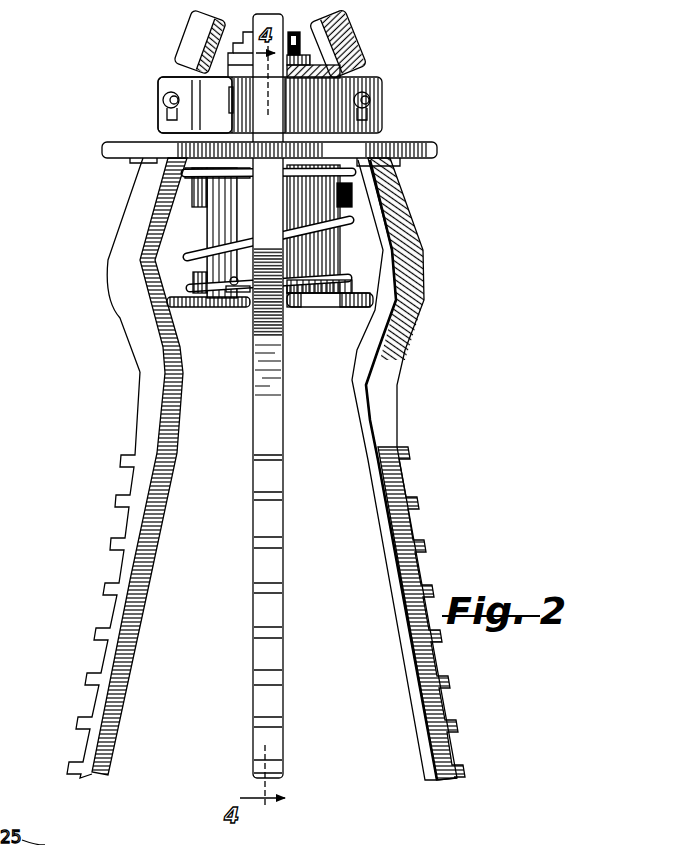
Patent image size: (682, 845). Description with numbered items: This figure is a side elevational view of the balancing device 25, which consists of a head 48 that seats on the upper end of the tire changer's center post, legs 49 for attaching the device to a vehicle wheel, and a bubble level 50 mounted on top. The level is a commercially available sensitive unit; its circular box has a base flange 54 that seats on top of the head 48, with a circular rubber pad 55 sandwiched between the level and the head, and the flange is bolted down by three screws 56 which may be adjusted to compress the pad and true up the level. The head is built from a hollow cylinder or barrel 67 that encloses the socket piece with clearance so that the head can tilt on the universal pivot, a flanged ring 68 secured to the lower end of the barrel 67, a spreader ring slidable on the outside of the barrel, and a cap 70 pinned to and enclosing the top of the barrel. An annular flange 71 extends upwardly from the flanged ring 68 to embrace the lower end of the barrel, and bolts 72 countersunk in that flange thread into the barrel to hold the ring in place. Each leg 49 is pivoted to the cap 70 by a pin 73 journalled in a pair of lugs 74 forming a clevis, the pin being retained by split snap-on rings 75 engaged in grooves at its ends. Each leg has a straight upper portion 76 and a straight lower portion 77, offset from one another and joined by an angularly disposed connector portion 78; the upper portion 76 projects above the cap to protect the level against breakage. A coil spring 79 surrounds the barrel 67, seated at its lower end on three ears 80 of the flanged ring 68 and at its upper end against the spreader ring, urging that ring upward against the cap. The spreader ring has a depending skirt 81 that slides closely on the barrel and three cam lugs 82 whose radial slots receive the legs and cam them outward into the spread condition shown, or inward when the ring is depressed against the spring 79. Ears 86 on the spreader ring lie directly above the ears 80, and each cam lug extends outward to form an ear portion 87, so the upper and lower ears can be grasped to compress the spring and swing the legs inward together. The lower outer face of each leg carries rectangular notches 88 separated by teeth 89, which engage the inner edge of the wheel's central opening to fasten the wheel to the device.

The balancing device 25 is at (424, 311).
The head 48 is at (350, 196).
The legs 49 is at (392, 440).
The bubble level 50 is at (296, 32).
The base flange 54 is at (312, 56).
The rubber pad 55 is at (366, 66).
The screws 56 is at (305, 47).
The cylinder or barrel 67 is at (326, 258).
The flanged ring 68 is at (236, 308).
The cap 70 is at (210, 72).
The annular flange 71 is at (192, 280).
The bolts 72 is at (240, 284).
The pin 73 is at (163, 100).
The lugs 74 is at (158, 80).
The split snap-on rings 75 is at (168, 114).
The upper portion 76 is at (184, 44).
The lower portion 77 is at (134, 419).
The connector portion 78 is at (172, 330).
The coil spring 79 is at (360, 221).
The ears 80 is at (360, 310).
The skirt 81 is at (196, 206).
The cam lugs 82 is at (113, 141).
The ears 86 is at (162, 163).
The ear portion 87 is at (107, 158).
The rectangular notches 88 is at (267, 568).
The teeth 89 is at (273, 677).